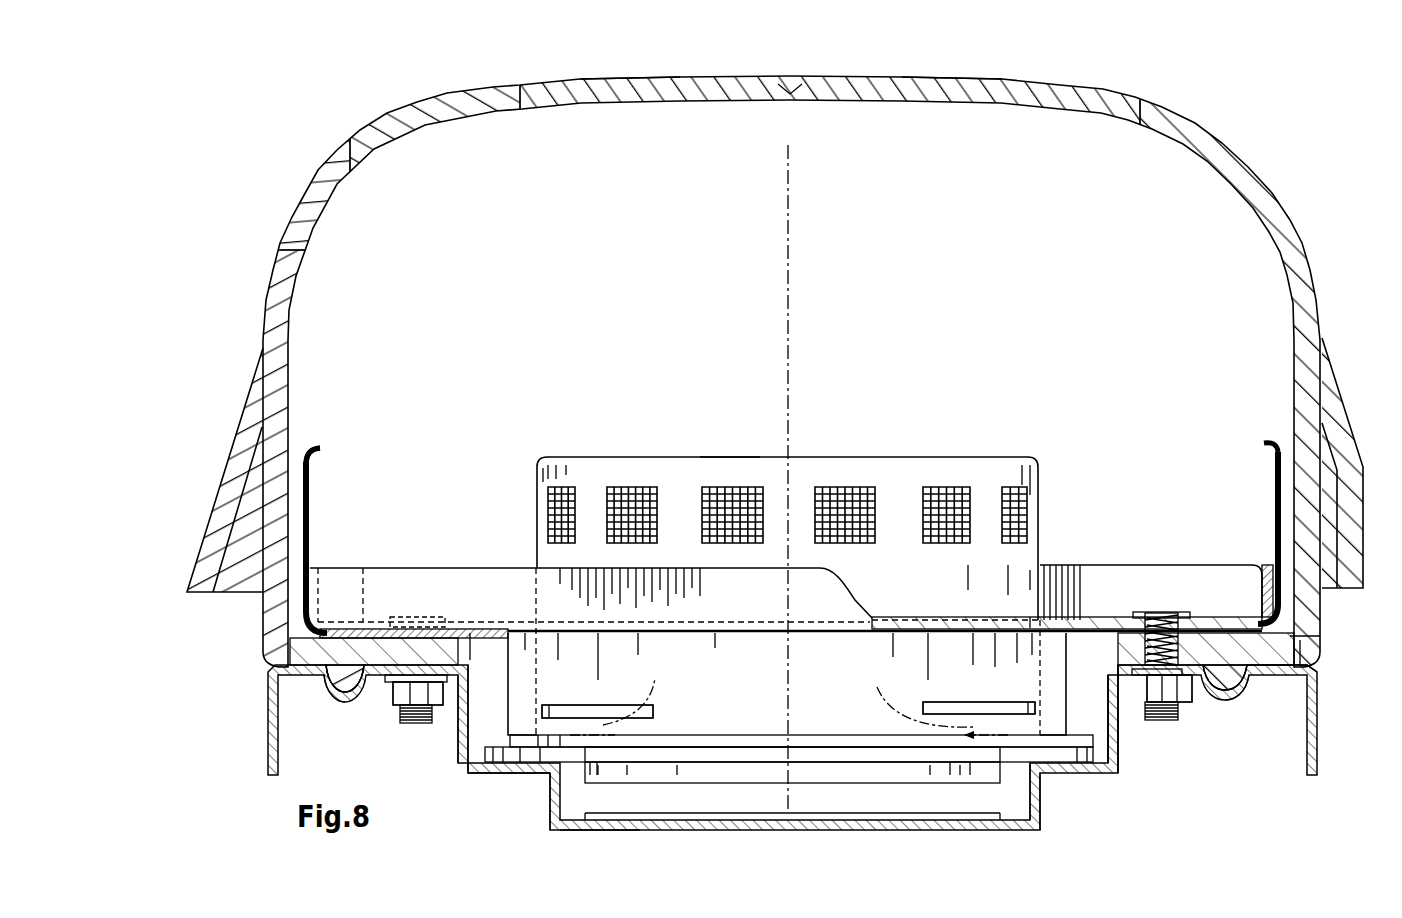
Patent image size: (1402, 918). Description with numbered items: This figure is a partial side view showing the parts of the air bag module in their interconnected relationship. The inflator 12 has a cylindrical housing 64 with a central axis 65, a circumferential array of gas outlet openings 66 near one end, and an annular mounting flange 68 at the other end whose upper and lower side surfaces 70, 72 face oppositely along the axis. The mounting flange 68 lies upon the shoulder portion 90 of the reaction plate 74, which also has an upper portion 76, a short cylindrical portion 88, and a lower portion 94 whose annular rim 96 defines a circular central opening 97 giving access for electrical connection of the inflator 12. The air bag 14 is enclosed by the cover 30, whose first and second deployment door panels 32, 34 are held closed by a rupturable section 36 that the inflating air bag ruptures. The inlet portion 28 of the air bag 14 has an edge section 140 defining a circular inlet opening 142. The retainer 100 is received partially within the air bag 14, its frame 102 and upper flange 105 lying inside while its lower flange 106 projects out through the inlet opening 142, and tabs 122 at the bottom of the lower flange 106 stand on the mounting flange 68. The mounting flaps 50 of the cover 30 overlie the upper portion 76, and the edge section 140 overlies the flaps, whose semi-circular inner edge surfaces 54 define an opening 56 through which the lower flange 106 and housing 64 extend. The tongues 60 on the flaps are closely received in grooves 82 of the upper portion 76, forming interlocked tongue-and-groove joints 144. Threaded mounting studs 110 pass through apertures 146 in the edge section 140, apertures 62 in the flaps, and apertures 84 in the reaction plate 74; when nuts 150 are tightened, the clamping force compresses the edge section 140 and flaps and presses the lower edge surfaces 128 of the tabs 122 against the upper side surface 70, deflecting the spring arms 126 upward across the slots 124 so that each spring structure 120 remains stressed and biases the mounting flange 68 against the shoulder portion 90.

The inflator 12 is at (598, 456).
The inflatable vehicle occupant protection device 14 is at (322, 450).
The inlet portion 28 is at (300, 490).
The cover 30 is at (260, 340).
The first deployment door panel 32 is at (712, 78).
The second deployment door panel 34 is at (828, 81).
The rupturable section 36 is at (788, 78).
The mounting flaps 50 is at (468, 632).
The semi-circular inner edge surfaces 54 is at (480, 632).
The circular opening 56 is at (480, 670).
The tongue 60 is at (322, 682).
The apertures 62 is at (1172, 625).
The cylindrical housing 64 is at (715, 470).
The central axis 65 is at (788, 243).
The gas outlet openings 66 is at (838, 482).
The mounting flange 68 is at (1048, 772).
The upper side surface 70 is at (876, 731).
The lower side surface 72 is at (850, 784).
The reaction plate 74 is at (267, 683).
The upper portion 76 is at (1282, 660).
The grooves 82 is at (352, 650).
The apertures 84 is at (1146, 678).
The cylindrical portion 88 is at (483, 755).
The shoulder portion 90 is at (496, 776).
The lower portion 94 is at (550, 824).
The annular rim 96 is at (578, 830).
The circular central opening 97 is at (632, 832).
The retainer 100 is at (430, 563).
The frame 102 is at (362, 600).
The upper flange 105 is at (400, 568).
The lower flange 106 is at (1113, 762).
The threaded mounting studs 110 is at (412, 723).
The spring structure 120 is at (627, 672).
The tab 122 is at (625, 742).
The slot 124 is at (662, 710).
The spring arm 126 is at (616, 700).
The lower edge surface 128 is at (590, 745).
The edge section 140 is at (485, 632).
The circular inlet opening 142 is at (524, 637).
The tongue-and-groove joints 144 is at (337, 695).
The apertures 146 is at (1155, 630).
The nuts 150 is at (402, 690).